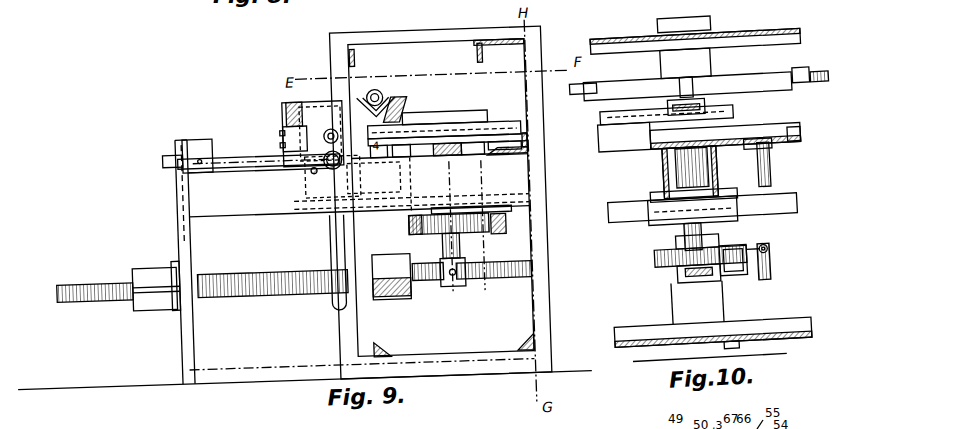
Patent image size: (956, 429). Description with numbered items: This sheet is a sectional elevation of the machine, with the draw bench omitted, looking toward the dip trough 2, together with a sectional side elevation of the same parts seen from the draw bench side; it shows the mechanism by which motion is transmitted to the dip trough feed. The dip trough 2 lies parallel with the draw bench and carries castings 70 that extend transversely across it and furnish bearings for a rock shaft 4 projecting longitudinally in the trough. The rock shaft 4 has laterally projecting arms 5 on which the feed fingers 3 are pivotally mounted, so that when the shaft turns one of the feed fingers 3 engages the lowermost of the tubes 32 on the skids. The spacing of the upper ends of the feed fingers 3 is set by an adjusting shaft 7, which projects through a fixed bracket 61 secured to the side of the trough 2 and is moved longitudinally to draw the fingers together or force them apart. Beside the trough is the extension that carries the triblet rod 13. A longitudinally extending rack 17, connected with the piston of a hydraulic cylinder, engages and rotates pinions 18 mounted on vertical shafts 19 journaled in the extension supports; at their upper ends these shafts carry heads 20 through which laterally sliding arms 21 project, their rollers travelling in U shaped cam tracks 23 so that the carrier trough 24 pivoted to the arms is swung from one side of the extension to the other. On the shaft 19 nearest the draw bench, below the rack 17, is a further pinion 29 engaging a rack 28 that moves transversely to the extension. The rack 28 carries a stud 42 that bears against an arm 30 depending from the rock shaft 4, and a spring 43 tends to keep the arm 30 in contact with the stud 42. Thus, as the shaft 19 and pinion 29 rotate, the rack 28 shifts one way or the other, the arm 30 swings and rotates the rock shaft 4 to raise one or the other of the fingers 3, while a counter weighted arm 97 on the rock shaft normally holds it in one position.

In FIG. 9, the dip trough 2 is at (304, 108).
In FIG. 9, the feed fingers 3 is at (346, 115).
In FIG. 9, the rock shaft 4 is at (350, 163).
In FIG. 10, the rock shaft 4 is at (812, 140).
In FIG. 9, the arms 5 is at (323, 199).
In FIG. 9, the adjusting shaft 7 is at (332, 139).
In FIG. 9, the triblet rod 13 is at (394, 104).
In FIG. 10, the triblet rod 13 is at (828, 76).
In FIG. 9, the rack 17 is at (511, 229).
In FIG. 10, the rack 17 is at (788, 207).
In FIG. 9, the pinions 18 is at (415, 226).
In FIG. 9, the vertical shafts 19 is at (465, 250).
In FIG. 10, the vertical shafts 19 is at (692, 227).
In FIG. 9, the heads 20 is at (449, 116).
In FIG. 10, the heads 20 is at (716, 108).
In FIG. 9, the sliding arms 21 is at (393, 123).
In FIG. 10, the sliding arms 21 is at (683, 108).
In FIG. 9, the U shaped cam tracks 23 is at (447, 3).
In FIG. 10, the U shaped cam tracks 23 is at (610, 125).
In FIG. 9, the carrier trough 24 is at (401, 112).
In FIG. 10, the carrier trough 24 is at (621, 92).
In FIG. 9, the rack 28 is at (246, 290).
In FIG. 10, the rack 28 is at (747, 277).
In FIG. 9, the pinion 29 is at (443, 291).
In FIG. 10, the pinion 29 is at (662, 263).
In FIG. 9, the arm 30 is at (338, 239).
In FIG. 10, the arm 30 is at (769, 185).
In FIG. 9, the tubes 32 is at (393, 94).
In FIG. 10, the tubes 32 is at (770, 78).
In FIG. 9, the stud 42 is at (354, 271).
In FIG. 9, the spring 43 is at (406, 298).
In FIG. 10, the spring 43 is at (769, 283).
In FIG. 9, the fixed bracket 61 is at (290, 141).
In FIG. 9, the castings 70 is at (317, 172).
In FIG. 9, the counter weighted arm 97 is at (230, 147).